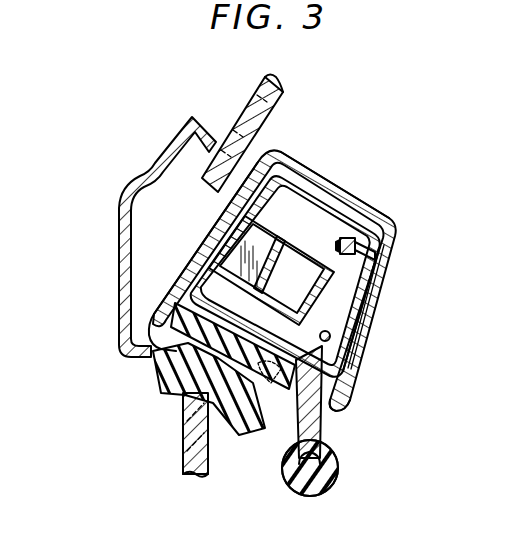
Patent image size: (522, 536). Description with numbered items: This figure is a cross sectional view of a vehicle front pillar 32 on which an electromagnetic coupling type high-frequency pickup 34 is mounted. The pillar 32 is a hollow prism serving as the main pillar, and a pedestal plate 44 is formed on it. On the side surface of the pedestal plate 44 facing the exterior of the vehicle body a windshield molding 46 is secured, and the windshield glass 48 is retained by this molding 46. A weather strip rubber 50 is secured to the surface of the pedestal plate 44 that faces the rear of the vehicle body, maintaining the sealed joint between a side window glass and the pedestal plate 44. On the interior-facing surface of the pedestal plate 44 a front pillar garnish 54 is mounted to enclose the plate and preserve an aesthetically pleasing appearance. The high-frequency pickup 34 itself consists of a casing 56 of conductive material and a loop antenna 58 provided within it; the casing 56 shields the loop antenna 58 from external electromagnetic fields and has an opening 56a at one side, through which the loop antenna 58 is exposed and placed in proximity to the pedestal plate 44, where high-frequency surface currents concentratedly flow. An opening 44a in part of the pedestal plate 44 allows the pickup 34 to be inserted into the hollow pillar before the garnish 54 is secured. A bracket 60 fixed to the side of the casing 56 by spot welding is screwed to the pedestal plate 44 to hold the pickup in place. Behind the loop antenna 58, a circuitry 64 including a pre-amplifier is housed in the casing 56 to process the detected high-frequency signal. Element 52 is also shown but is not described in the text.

The pillar 32 is at (335, 179).
The high-frequency pickup 34 is at (268, 208).
The pedestal plate 44 is at (342, 404).
The opening 44a is at (392, 271).
The windshield molding 46 is at (117, 341).
The windshield glass 48 is at (242, 119).
The weather strip rubber 50 is at (170, 391).
The support bar 52 is at (183, 459).
The front pillar garnish 54 is at (356, 196).
The casing 56 is at (223, 228).
The opening 56a is at (348, 396).
The loop antenna 58 is at (348, 359).
The bracket 60 is at (371, 304).
The circuitry 64 is at (271, 240).